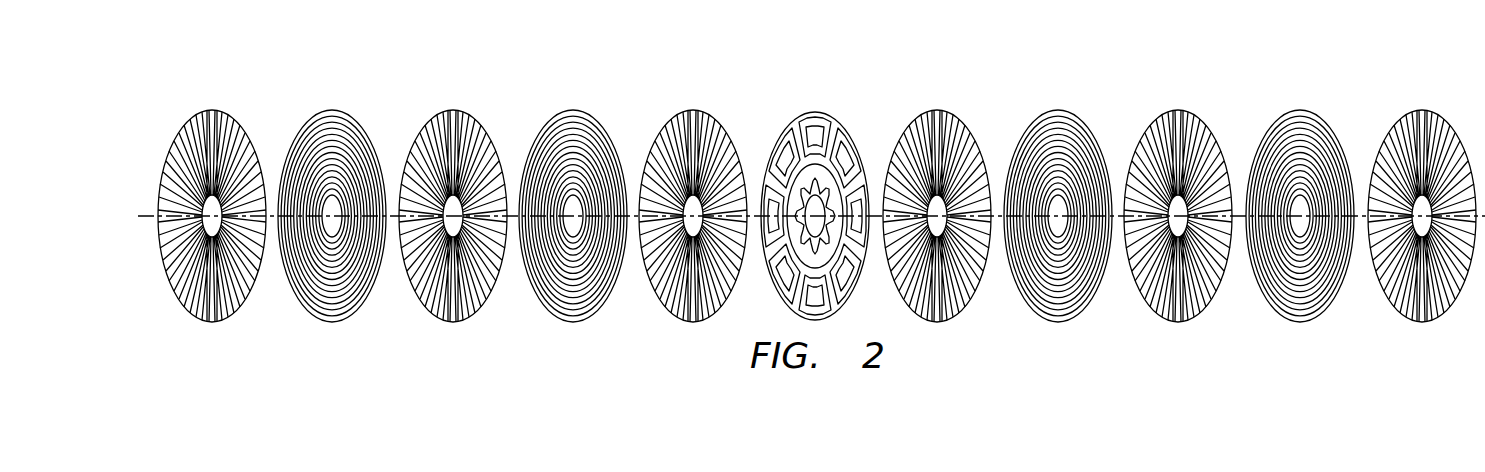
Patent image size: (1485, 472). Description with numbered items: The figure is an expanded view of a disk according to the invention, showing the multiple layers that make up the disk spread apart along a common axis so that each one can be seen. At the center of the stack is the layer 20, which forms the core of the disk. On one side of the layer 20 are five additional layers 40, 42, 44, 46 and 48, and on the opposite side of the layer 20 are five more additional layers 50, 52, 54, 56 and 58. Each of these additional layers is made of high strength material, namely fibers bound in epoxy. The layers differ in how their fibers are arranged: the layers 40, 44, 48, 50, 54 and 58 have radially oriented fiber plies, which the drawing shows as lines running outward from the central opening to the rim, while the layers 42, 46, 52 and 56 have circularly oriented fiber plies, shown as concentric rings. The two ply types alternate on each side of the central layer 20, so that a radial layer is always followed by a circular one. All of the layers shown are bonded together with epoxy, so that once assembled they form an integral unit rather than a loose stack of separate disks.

The layer 20 is at (815, 112).
The layer 40 is at (937, 110).
The layer 42 is at (1058, 110).
The layer 44 is at (1178, 110).
The layer 46 is at (1300, 110).
The layer 48 is at (1422, 110).
The layer 50 is at (693, 110).
The layer 52 is at (573, 110).
The layer 54 is at (453, 110).
The layer 56 is at (332, 110).
The layer 58 is at (212, 110).